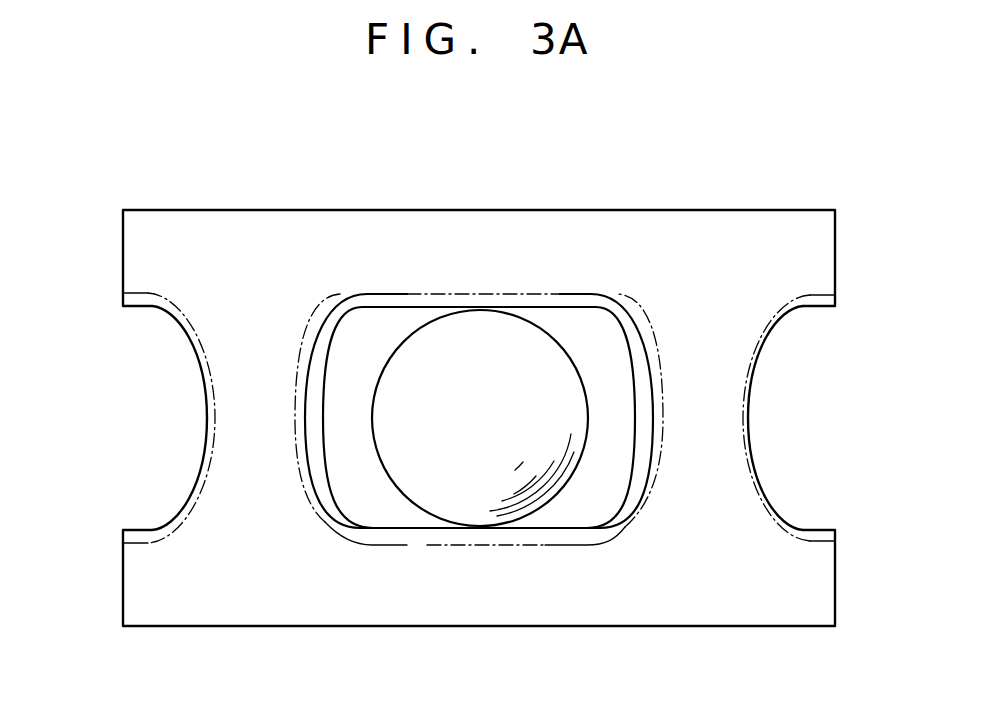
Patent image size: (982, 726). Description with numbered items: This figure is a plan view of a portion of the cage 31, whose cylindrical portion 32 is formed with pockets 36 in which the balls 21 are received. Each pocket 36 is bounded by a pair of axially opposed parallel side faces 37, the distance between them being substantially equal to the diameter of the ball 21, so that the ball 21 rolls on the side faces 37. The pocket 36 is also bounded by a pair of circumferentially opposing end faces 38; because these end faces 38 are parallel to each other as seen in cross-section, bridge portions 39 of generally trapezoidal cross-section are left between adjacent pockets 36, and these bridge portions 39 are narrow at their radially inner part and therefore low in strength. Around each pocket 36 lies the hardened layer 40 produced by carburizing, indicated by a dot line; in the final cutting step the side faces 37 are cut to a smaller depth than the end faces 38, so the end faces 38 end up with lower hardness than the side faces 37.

The ball 21 is at (492, 420).
The cage 31 is at (479, 370).
The cylindrical portion 32 is at (302, 225).
The pocket 36 is at (562, 317).
The side face 37 is at (392, 312).
The end face 38 is at (317, 447).
The bridge portion 39 is at (218, 348).
The hardened layer 40 is at (502, 535).